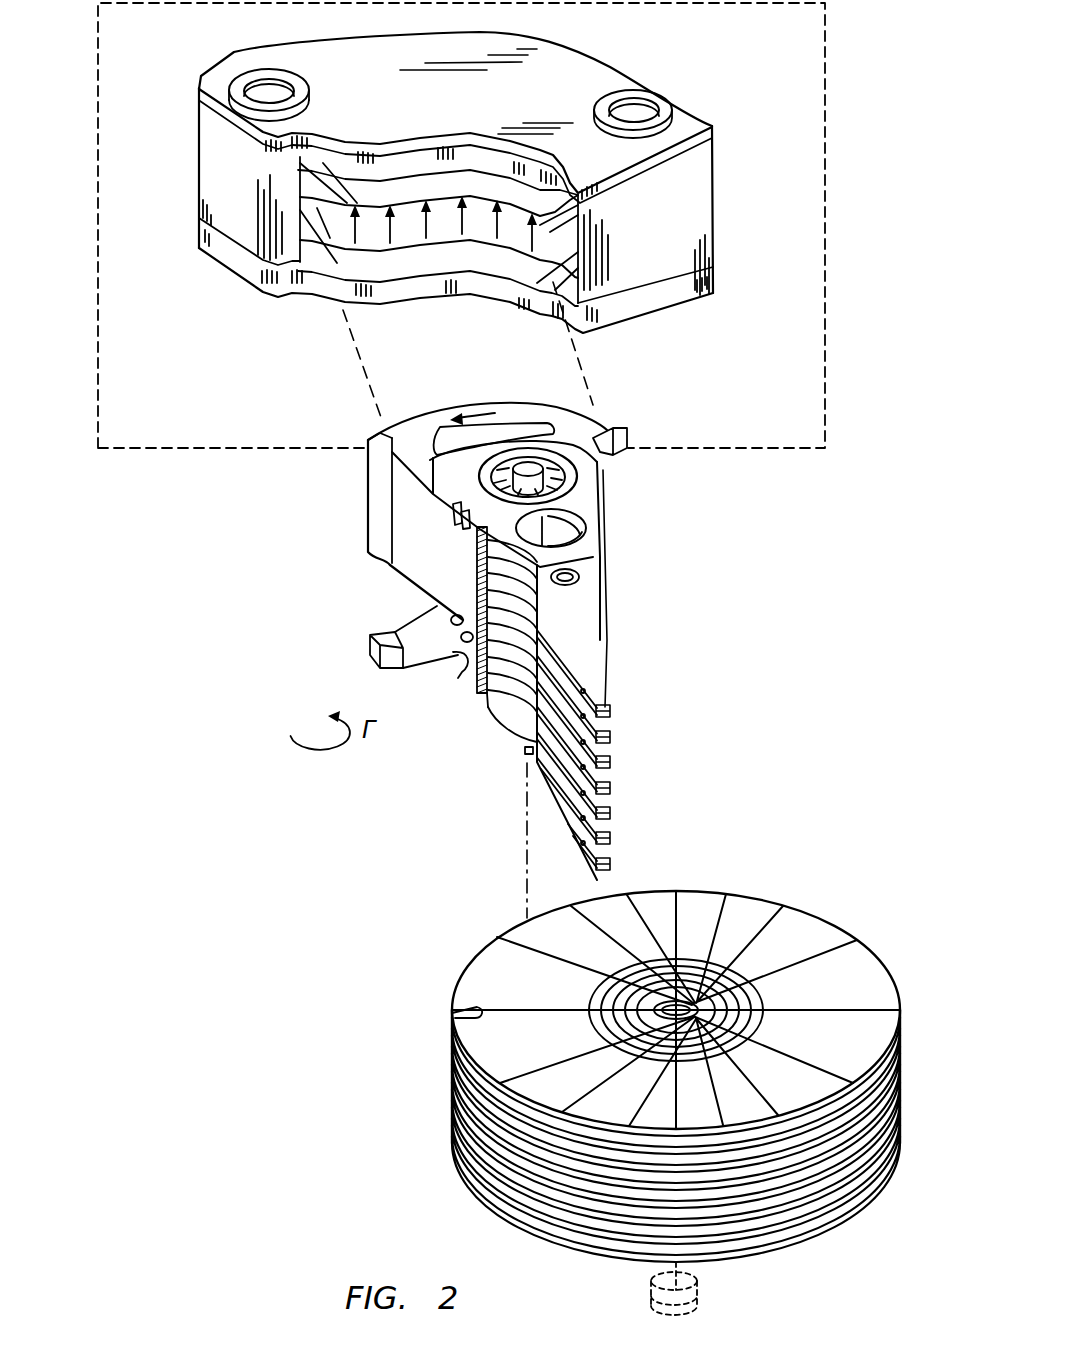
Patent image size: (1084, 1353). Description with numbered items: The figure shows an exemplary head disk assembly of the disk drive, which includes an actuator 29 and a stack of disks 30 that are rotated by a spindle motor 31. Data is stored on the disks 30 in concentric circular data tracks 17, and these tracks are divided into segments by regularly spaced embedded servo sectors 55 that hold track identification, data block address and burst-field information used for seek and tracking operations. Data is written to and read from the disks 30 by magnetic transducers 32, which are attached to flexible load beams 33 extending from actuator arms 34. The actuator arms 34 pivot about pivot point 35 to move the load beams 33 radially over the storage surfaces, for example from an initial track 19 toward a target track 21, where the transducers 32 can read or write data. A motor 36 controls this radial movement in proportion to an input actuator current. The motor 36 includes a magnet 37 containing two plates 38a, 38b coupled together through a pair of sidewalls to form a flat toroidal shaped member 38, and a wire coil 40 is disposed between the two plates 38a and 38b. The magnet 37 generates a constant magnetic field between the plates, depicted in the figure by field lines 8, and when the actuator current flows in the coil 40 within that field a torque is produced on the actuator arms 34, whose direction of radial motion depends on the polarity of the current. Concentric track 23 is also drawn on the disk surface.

The magnetic flux lines 8 is at (300, 197).
The concentric circular data tracks 17 is at (700, 960).
The initial track 19 is at (752, 986).
The target track 21 is at (768, 1003).
The outer data track 23 is at (735, 963).
The actuator 29 is at (180, 545).
The disks 30 is at (686, 1079).
The spindle motor 31 is at (651, 1303).
The magnetic transducers 32 is at (610, 709).
The flexible load beams 33 is at (598, 640).
The actuator arms 34 is at (593, 549).
The pivot point 35 is at (555, 470).
The motor 36 is at (827, 200).
The magnet 37 is at (586, 40).
The flat toroidal shaped member 38 is at (700, 211).
The plate 38a is at (407, 176).
The plate 38b is at (401, 263).
The wire coil 40 is at (418, 423).
The embedded servo sectors 55 is at (460, 1018).